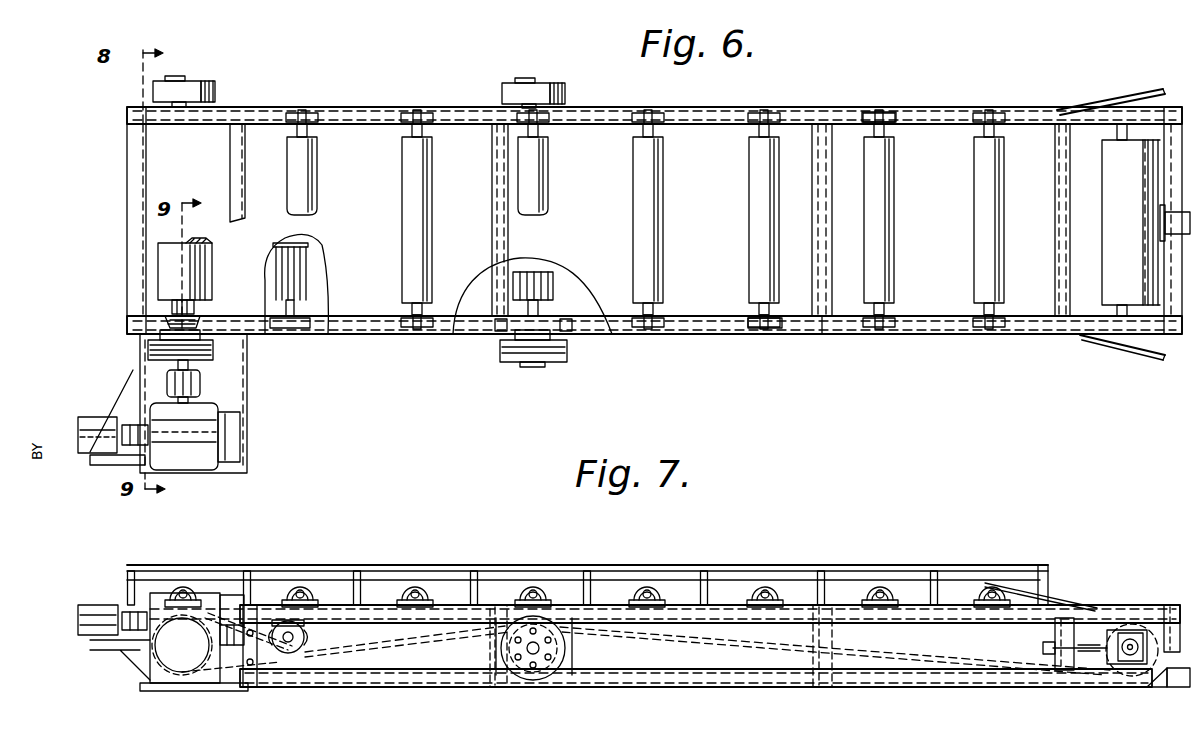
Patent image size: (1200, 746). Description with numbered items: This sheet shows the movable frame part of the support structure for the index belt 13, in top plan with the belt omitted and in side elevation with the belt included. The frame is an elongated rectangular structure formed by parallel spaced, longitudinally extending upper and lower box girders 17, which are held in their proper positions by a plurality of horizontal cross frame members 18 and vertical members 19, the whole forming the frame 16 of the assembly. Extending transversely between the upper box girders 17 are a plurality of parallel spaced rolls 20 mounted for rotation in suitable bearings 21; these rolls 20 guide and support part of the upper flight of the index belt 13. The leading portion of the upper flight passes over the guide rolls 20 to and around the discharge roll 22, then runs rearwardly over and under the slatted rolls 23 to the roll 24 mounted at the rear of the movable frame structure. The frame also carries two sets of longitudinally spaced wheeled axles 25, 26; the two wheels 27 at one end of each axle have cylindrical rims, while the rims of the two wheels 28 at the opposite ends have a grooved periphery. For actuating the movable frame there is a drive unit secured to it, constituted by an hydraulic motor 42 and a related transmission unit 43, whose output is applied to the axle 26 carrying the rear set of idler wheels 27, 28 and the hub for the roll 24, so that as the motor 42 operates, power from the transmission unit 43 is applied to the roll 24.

In FIG. 7, the index belt 13 is at (895, 583).
In FIG. 6, the conveyor frame 16 is at (822, 316).
In FIG. 6, the upper and lower box girders 17 is at (722, 112).
In FIG. 7, the upper and lower box girders 17 is at (945, 618).
In FIG. 6, the horizontal cross frame members 18 is at (135, 224).
In FIG. 7, the vertical members 19 is at (575, 650).
In FIG. 6, the rolls 20 is at (308, 180).
In FIG. 6, the bearings 21 is at (878, 112).
In FIG. 7, the bearings 21 is at (420, 592).
In FIG. 6, the discharge roll 22 is at (1110, 143).
In FIG. 7, the discharge roll 22 is at (1128, 630).
In FIG. 6, the slatted rolls 23 is at (305, 302).
In FIG. 7, the slatted rolls 23 is at (307, 640).
In FIG. 6, the roll 24 is at (175, 273).
In FIG. 7, the roll 24 is at (190, 655).
In FIG. 6, the wheeled axle 25 is at (540, 310).
In FIG. 7, the wheeled axle 25 is at (540, 655).
In FIG. 6, the wheeled axle 26 is at (178, 312).
In FIG. 6, the wheels 27 is at (215, 91).
In FIG. 6, the wheels 28 is at (150, 350).
In FIG. 7, the wheels 28 is at (518, 674).
In FIG. 6, the hydraulic motor 42 is at (95, 420).
In FIG. 7, the hydraulic motor 42 is at (92, 612).
In FIG. 6, the transmission unit 43 is at (205, 460).
In FIG. 7, the transmission unit 43 is at (205, 600).